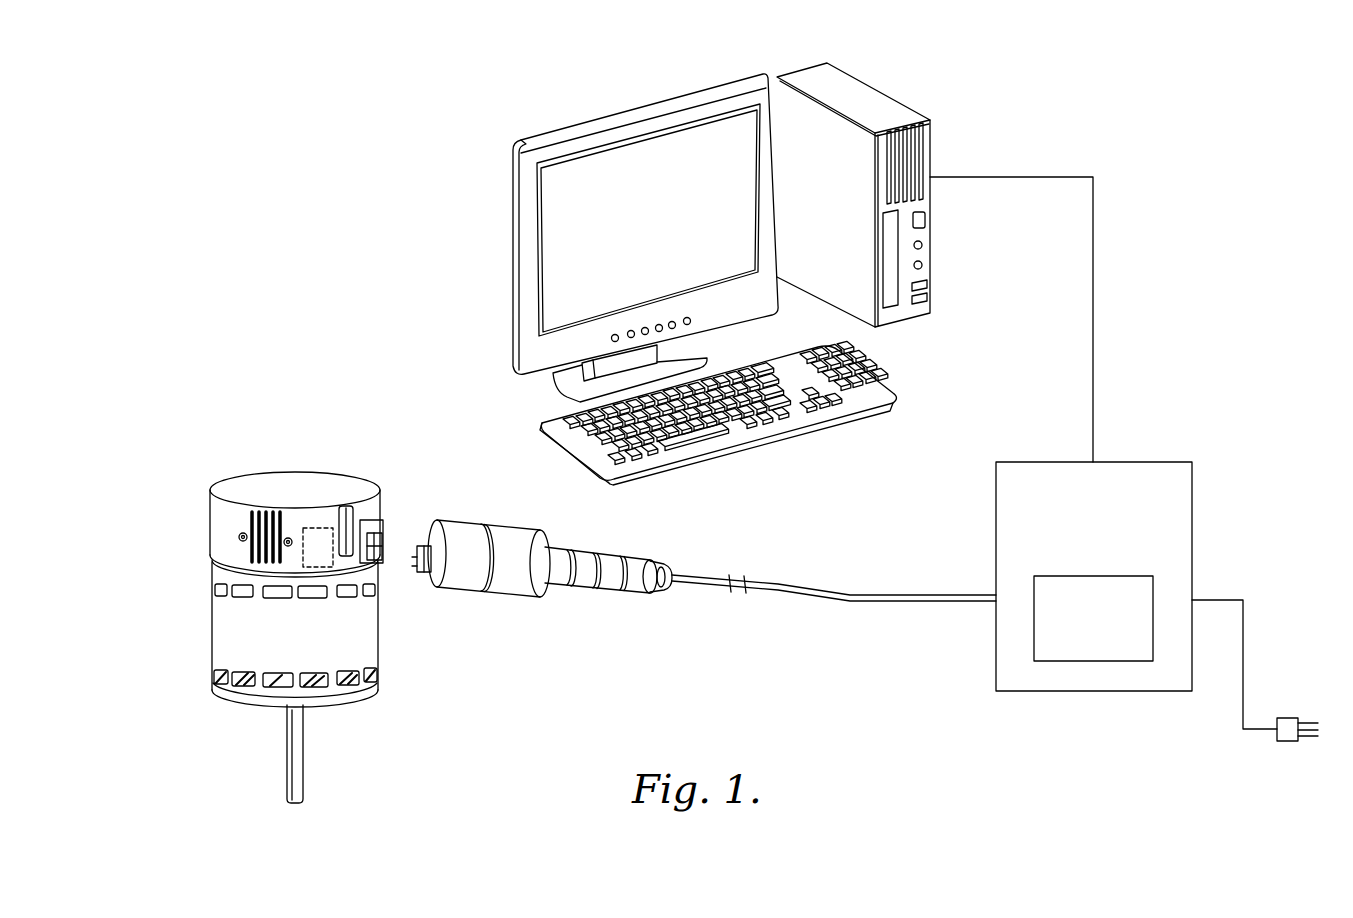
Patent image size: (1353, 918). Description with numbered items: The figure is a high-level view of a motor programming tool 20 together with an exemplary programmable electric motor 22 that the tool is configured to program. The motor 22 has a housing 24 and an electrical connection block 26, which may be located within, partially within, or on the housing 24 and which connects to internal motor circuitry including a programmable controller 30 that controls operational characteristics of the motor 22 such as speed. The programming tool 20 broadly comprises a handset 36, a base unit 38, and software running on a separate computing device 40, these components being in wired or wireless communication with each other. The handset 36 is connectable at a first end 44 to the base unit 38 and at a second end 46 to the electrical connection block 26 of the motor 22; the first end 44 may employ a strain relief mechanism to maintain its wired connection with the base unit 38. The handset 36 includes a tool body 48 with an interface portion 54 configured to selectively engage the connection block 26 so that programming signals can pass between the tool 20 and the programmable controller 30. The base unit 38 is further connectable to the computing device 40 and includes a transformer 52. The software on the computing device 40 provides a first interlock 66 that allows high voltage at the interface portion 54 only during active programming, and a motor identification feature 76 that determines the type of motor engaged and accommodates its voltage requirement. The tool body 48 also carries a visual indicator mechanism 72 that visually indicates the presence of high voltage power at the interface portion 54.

The motor programming tool 20 is at (600, 650).
The electric motor 22 is at (373, 705).
The housing 24 is at (288, 478).
The electrical connection block 26 is at (379, 560).
The programmable controller 30 is at (313, 557).
The handset 36 is at (590, 527).
The base unit 38 is at (1173, 473).
The computing device 40 is at (647, 119).
The first end 44 is at (675, 557).
The second end 46 is at (455, 512).
The tool body 48 is at (557, 577).
The transformer 52 is at (1093, 618).
The interface portion 54 is at (417, 538).
The first interlock 66 is at (488, 142).
The visual indicator mechanism 72 is at (485, 597).
The motor identification feature 76 is at (490, 322).